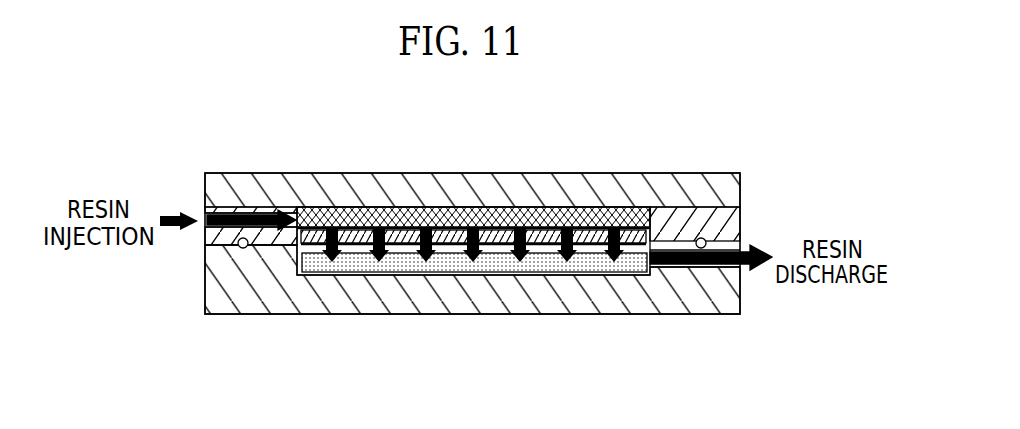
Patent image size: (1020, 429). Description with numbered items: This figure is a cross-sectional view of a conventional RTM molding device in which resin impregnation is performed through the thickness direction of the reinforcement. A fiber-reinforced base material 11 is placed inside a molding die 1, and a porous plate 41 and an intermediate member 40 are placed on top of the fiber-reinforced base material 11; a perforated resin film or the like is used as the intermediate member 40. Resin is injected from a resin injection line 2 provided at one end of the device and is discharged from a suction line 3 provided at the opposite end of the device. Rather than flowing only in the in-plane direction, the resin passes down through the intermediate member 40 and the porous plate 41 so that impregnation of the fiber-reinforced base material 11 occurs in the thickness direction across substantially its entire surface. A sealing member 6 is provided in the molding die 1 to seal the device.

The molding die 1 is at (475, 185).
The resin injection line 2 is at (233, 207).
The suction line 3 is at (703, 250).
The sealing member 6 is at (701, 238).
The fiber-reinforced base material 11 is at (507, 262).
The intermediate member 40 is at (547, 213).
The porous plate 41 is at (315, 246).